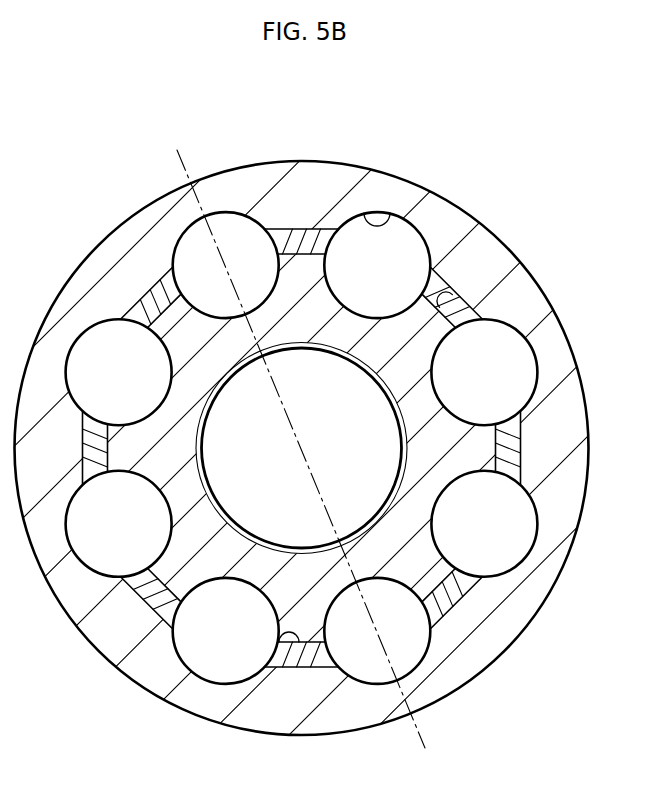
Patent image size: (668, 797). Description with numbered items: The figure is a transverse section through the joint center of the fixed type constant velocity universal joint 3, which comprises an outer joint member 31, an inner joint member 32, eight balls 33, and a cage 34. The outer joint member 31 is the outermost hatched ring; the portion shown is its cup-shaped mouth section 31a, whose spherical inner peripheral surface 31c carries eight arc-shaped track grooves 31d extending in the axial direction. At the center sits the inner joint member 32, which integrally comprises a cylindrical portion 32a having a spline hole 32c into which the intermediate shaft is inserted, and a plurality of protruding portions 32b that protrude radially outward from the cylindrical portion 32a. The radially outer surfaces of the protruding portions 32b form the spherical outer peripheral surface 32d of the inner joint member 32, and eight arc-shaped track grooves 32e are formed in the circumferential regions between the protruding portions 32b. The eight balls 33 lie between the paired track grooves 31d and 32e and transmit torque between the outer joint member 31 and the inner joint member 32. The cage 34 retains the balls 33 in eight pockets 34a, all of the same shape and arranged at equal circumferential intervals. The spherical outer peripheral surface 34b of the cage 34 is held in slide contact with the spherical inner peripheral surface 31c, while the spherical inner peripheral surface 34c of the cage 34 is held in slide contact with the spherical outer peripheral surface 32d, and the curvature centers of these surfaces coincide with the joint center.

The fixed type constant velocity universal joint 3 is at (464, 161).
The outer joint member 31 is at (466, 207).
The mouth section 31a is at (525, 300).
The spherical inner peripheral surface 31c is at (462, 290).
The track grooves 31d is at (380, 214).
The inner joint member 32 is at (418, 566).
The cylindrical portion 32a is at (420, 494).
The protruding portions 32b is at (523, 447).
The spline hole 32c is at (320, 353).
The spherical outer peripheral surface 32d is at (440, 598).
The track grooves 32e is at (450, 488).
The balls 33 is at (237, 231).
The cage 34 is at (157, 593).
The pockets 34a is at (177, 622).
The spherical outer peripheral surface 34b is at (308, 668).
The spherical inner peripheral surface 34c is at (278, 633).